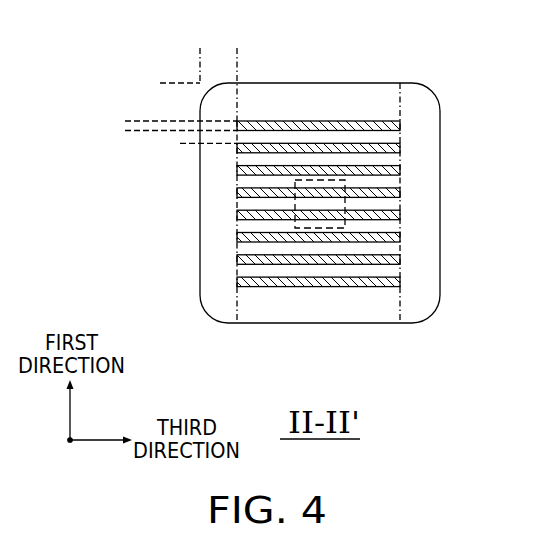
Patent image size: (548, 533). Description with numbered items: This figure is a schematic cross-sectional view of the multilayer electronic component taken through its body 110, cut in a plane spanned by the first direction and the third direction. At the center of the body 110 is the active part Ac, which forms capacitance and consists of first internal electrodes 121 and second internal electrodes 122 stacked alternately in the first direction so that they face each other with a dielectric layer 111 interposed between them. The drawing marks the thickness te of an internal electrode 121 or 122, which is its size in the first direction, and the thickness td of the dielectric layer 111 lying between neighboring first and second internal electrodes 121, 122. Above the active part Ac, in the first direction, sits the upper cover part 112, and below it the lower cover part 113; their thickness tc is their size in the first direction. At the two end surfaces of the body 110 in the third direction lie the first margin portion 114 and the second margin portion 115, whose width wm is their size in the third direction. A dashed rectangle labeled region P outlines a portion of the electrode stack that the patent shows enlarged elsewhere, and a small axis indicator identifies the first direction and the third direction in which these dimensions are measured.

The body 110 is at (303, 83).
The dielectric layer 111 is at (393, 158).
The upper cover part 112 is at (256, 92).
The lower cover part 113 is at (287, 308).
The first margin portion 114 is at (200, 238).
The second margin portion 115 is at (432, 233).
The first internal electrode 121 is at (353, 121).
The second internal electrode 122 is at (372, 143).
The active part Ac is at (230, 202).
The region P is at (330, 228).
The width of the margin portion wm is at (237, 57).
The thickness of the cover part tc is at (159, 83).
The thickness of the internal electrode te is at (131, 110).
The thickness of the dielectric layer td is at (186, 130).